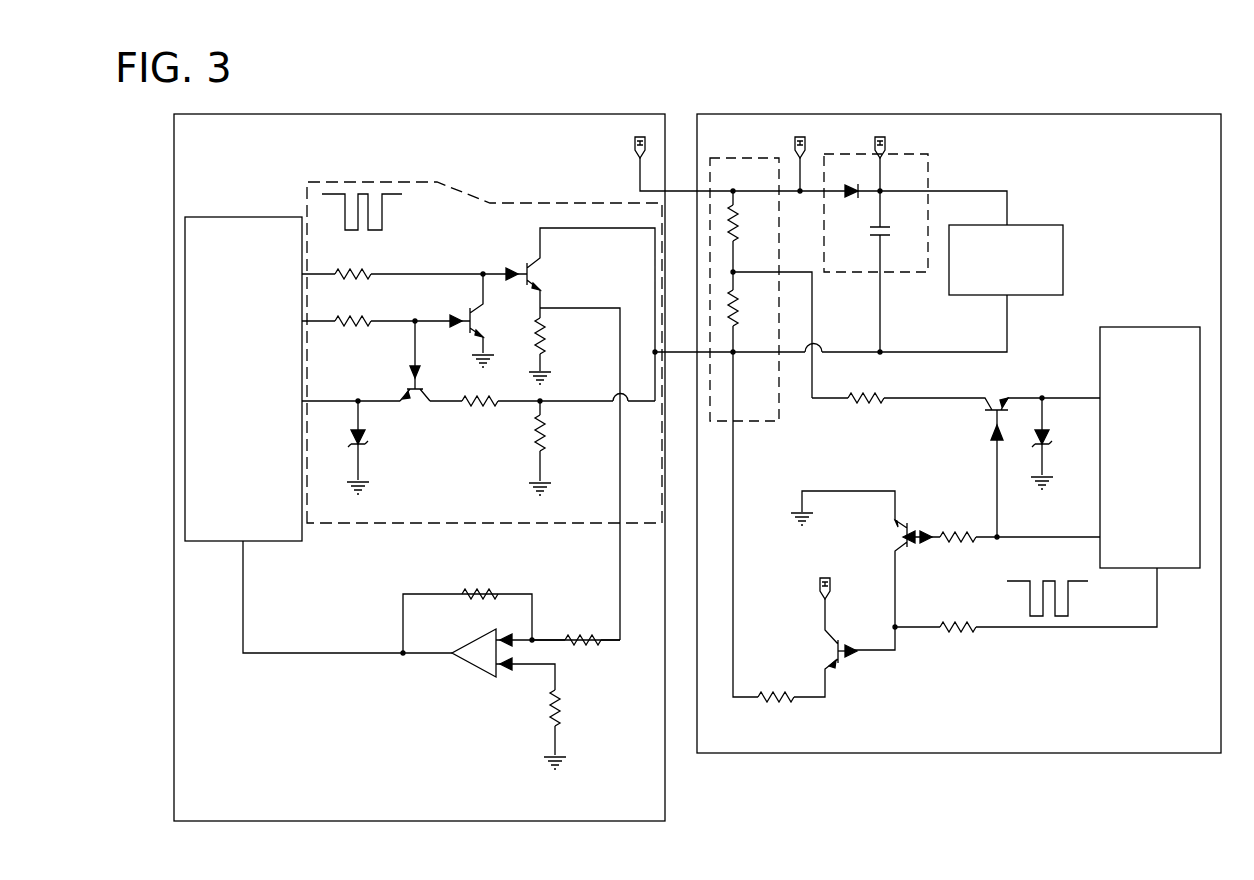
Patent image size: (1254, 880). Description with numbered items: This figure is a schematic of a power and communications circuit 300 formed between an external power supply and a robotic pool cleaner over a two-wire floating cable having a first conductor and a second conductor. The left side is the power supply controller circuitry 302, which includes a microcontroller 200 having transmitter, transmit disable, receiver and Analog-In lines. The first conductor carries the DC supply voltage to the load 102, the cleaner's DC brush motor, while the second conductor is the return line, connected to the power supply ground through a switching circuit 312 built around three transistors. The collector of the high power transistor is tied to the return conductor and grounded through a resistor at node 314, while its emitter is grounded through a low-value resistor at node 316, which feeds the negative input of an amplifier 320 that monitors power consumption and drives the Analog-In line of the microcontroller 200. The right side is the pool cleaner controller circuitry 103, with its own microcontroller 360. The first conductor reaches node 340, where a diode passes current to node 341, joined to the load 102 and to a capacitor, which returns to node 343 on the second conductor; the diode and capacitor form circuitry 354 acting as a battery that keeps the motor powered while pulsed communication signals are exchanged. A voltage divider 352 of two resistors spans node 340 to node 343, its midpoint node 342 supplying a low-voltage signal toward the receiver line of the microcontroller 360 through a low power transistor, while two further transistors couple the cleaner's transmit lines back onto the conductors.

The load 102 is at (1045, 225).
The pool cleaner controller circuitry 103 is at (1076, 736).
The microcontroller 200 is at (214, 543).
The power and communications circuit 300 is at (730, 812).
The power supply controller circuitry 302 is at (262, 806).
The switching circuit 312 is at (527, 523).
The node 314 is at (540, 401).
The node 316 is at (540, 308).
The amplifier 320 is at (458, 661).
The node 340 is at (733, 191).
The node 341 is at (880, 191).
The node 342 is at (733, 272).
The node 343 is at (733, 352).
The voltage divider 352 is at (779, 410).
The circuitry for temporarily powering the load 354 is at (903, 272).
The microcontroller 360 is at (1183, 568).